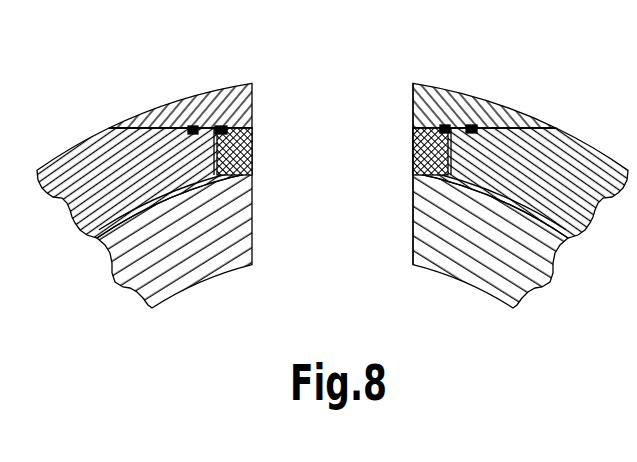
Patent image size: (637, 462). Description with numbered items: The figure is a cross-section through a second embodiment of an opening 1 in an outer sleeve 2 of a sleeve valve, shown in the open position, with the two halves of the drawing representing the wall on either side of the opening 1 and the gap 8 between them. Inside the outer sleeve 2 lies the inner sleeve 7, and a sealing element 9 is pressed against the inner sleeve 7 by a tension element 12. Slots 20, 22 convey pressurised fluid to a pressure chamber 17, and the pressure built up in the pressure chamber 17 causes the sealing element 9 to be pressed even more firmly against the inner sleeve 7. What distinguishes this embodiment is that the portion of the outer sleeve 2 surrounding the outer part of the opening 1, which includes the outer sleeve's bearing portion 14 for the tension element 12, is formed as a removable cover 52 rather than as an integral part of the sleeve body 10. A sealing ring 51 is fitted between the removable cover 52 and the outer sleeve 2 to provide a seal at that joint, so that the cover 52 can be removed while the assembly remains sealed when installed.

The opening 1 is at (345, 78).
The outer sleeve 2 is at (575, 140).
The inner sleeve 7 is at (478, 270).
The gap between ring segments 8 is at (340, 242).
The sealing element 9 is at (413, 154).
The ring body 10 is at (299, 78).
The tension element 12 is at (449, 124).
The bearing portion 14 is at (413, 104).
The pressure chamber 17 is at (212, 92).
The slot 20 is at (253, 123).
The slot 22 is at (253, 151).
The sealing ring 51 is at (474, 124).
The removable cover 52 is at (433, 95).